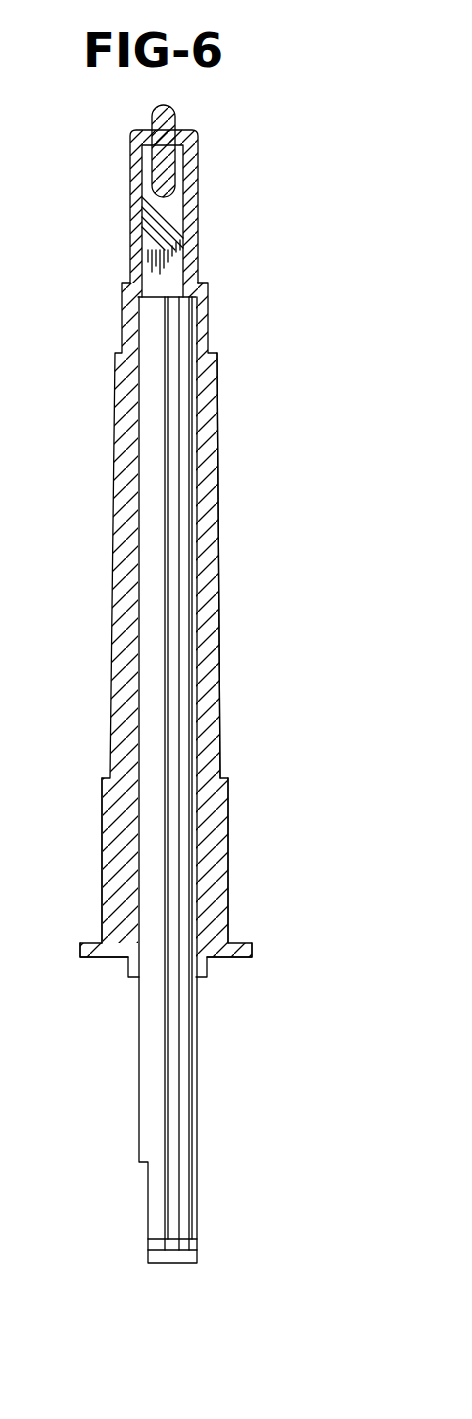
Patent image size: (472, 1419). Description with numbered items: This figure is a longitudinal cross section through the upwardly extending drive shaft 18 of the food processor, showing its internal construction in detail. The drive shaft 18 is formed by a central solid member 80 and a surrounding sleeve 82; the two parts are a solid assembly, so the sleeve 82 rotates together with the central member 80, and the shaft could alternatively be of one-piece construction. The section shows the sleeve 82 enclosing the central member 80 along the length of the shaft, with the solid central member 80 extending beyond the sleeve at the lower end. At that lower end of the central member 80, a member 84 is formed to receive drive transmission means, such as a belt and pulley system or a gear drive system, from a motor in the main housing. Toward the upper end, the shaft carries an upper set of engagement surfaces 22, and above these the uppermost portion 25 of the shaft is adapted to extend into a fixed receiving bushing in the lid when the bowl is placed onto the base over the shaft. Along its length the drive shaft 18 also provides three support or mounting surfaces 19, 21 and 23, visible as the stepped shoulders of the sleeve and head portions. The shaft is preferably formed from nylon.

The drive shaft 18 is at (196, 630).
The support or mounting surface 19 is at (224, 778).
The support or mounting surface 21 is at (210, 352).
The upper set of engagement surfaces 22 is at (224, 225).
The support or mounting surface 23 is at (207, 283).
The uppermost portion 25 is at (178, 122).
The central solid member 80 is at (183, 732).
The sleeve 82 is at (220, 657).
The member 84 is at (184, 780).